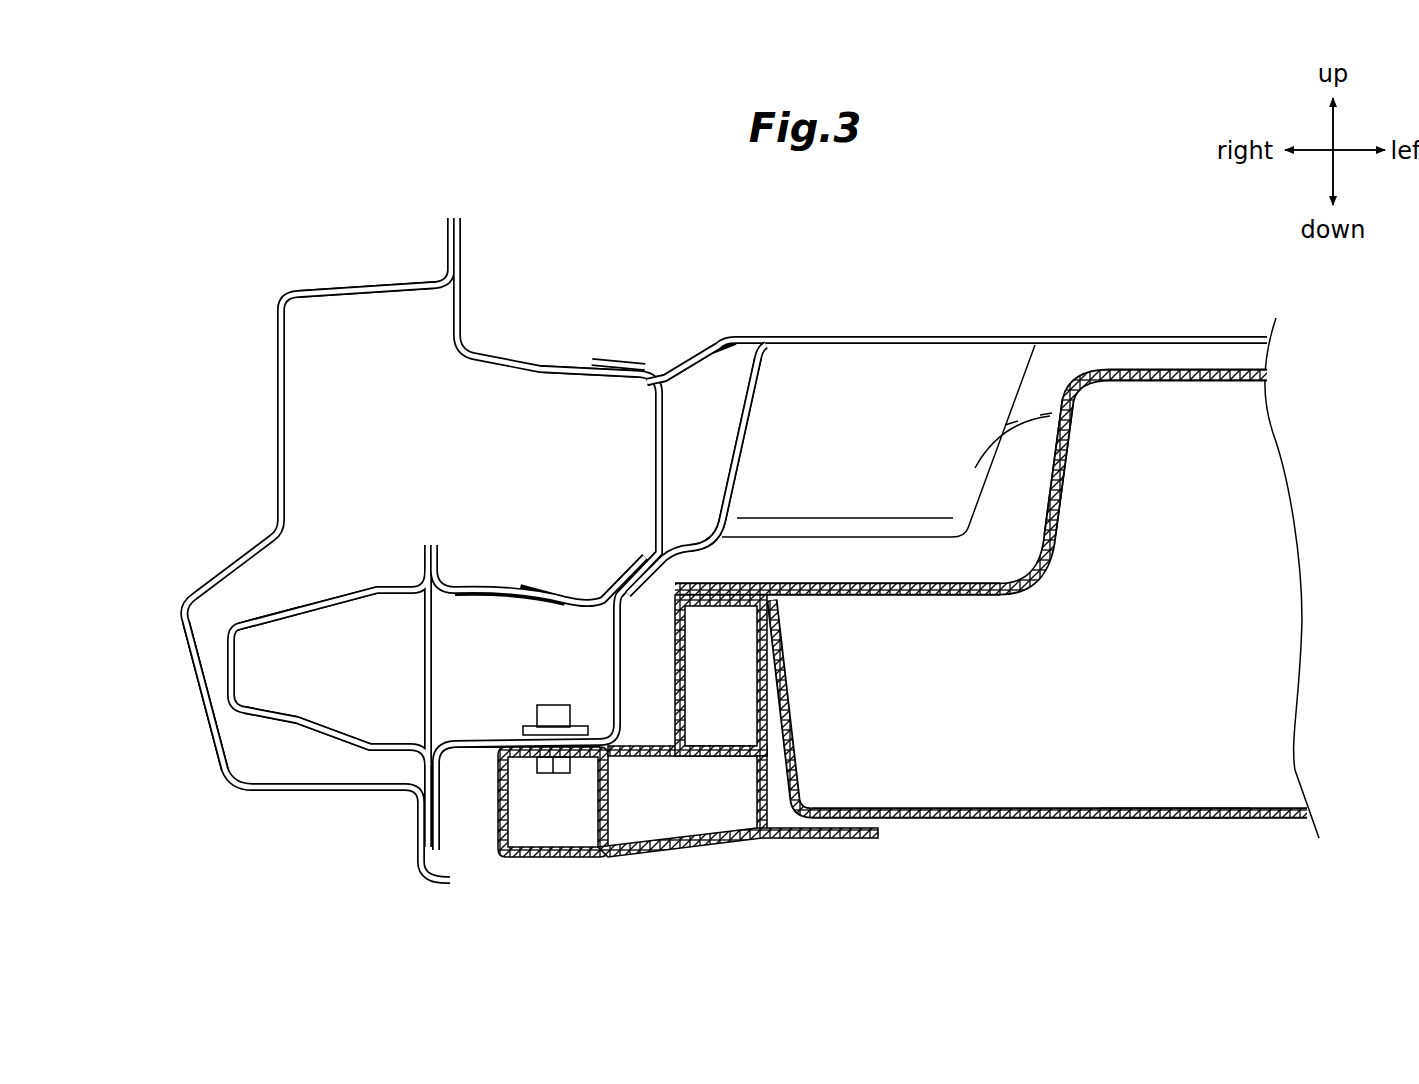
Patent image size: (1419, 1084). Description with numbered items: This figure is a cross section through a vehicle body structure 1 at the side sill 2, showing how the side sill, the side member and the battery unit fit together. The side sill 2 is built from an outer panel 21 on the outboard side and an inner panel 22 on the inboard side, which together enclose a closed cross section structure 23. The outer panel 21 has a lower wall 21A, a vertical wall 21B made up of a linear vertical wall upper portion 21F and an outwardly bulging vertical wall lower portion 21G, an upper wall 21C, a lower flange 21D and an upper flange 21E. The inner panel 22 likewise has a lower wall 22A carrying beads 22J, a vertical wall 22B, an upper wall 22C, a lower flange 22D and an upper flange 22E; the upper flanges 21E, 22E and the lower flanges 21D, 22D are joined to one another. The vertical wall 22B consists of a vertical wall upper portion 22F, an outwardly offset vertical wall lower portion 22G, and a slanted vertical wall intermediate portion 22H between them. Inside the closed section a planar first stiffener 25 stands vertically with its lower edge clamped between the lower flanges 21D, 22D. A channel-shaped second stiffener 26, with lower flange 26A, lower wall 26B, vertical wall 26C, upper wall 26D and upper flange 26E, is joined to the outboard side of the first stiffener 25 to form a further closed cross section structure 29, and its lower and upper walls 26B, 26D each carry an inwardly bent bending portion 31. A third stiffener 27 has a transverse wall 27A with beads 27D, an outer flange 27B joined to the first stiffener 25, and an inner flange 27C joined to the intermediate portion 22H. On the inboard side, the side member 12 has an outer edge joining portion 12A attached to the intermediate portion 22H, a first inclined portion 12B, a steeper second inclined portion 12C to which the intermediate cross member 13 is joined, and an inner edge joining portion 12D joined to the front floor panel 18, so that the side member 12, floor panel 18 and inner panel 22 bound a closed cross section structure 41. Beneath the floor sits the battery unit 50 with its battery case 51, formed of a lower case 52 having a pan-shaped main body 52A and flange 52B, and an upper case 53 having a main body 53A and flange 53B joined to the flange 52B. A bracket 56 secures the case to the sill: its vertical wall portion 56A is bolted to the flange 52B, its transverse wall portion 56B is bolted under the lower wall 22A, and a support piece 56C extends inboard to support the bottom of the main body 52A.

The vehicle body structure 1 is at (283, 178).
The side sill 2 is at (242, 775).
The side member 12 is at (892, 370).
The outer edge joining portion 12A is at (670, 585).
The first inclined portion 12B is at (704, 545).
The second inclined portion 12C is at (755, 410).
The inner edge joining portion 12D is at (966, 344).
The intermediate cross member 13 is at (1067, 360).
The front floor panel 18 is at (681, 372).
The outer panel 21 is at (284, 302).
The lower wall 21A is at (300, 792).
The vertical wall 21B is at (278, 440).
The upper wall 21C is at (342, 290).
The lower flange 21D is at (418, 855).
The upper flange 21E is at (448, 230).
The vertical wall upper portion 21F is at (278, 352).
The vertical wall lower portion 21G is at (190, 657).
The inner panel 22 is at (500, 352).
The lower wall 22A is at (473, 752).
The vertical wall 22B is at (653, 458).
The upper wall 22C is at (560, 368).
The lower flange 22D is at (441, 822).
The upper flange 22E is at (462, 230).
The vertical wall upper portion 22F is at (654, 406).
The vertical wall lower portion 22G is at (613, 654).
The vertical wall intermediate portion 22H is at (645, 578).
The beads 22J is at (497, 738).
The closed cross section structure 23 is at (384, 300).
The first stiffener 25 is at (424, 637).
The second stiffener 26 is at (380, 590).
The lower flange 26A is at (405, 770).
The lower wall 26B is at (403, 744).
The vertical wall 26C is at (228, 674).
The upper wall 26D is at (350, 596).
The upper flange 26E is at (424, 552).
The third stiffener 27 is at (503, 588).
The transverse wall 27A is at (520, 612).
The outer flange 27B is at (440, 570).
The inner flange 27C is at (620, 597).
The beads 27D is at (575, 582).
The closed cross section structure 29 is at (269, 640).
The bending portion 31 is at (300, 616).
The closed cross section structure 41 is at (722, 336).
The battery unit 50 is at (1039, 757).
The battery case 51 is at (1188, 824).
The lower case 52 is at (1100, 824).
The main body 52A is at (950, 821).
The flange 52B is at (713, 600).
The upper case 53 is at (1188, 385).
The main body 53A is at (1063, 488).
The flange 53B is at (745, 586).
The bracket 56 is at (691, 758).
The vertical wall portion 56A is at (765, 708).
The transverse wall portion 56B is at (552, 858).
The support piece 56C is at (873, 839).